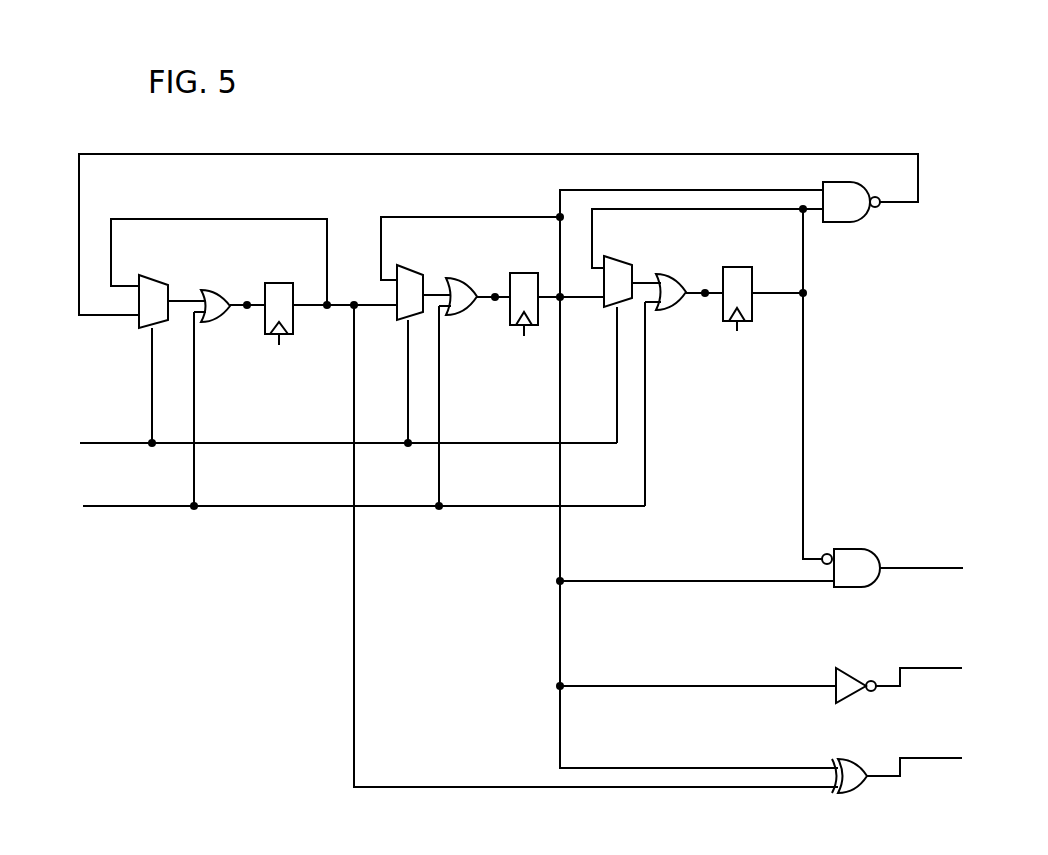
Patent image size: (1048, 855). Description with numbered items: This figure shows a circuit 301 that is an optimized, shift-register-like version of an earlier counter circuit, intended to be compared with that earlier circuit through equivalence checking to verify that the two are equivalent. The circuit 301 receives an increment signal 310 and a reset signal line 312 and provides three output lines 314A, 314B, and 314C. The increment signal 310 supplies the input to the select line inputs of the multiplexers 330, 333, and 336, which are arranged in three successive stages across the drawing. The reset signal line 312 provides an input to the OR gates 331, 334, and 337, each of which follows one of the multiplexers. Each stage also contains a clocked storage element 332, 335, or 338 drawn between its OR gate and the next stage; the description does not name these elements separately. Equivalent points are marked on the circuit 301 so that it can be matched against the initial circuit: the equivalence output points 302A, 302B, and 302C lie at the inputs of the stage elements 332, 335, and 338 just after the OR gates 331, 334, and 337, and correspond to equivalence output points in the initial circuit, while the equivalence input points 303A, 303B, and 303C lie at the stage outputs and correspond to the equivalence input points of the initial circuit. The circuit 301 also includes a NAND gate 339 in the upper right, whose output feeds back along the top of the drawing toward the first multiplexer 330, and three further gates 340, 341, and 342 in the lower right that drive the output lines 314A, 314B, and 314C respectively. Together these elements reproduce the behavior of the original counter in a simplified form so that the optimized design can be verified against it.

The circuit 301 is at (805, 92).
The increment signal 310 is at (90, 446).
The reset signal line 312 is at (92, 509).
The multiplexer 330 is at (152, 275).
The OR gate 331 is at (213, 290).
The first flip-flop 332 is at (279, 283).
The multiplexer 333 is at (410, 265).
The OR gate 334 is at (459, 278).
The second flip-flop 335 is at (524, 273).
The multiplexer 336 is at (620, 256).
The OR gate 337 is at (672, 274).
The third flip-flop 338 is at (737, 267).
The NAND gate 339 is at (845, 222).
The gate 340 is at (855, 587).
The gate 341 is at (837, 668).
The gate 342 is at (838, 759).
The equivalence output point 302A is at (247, 308).
The equivalence output point 302B is at (495, 300).
The equivalence output point 302C is at (705, 296).
The equivalence input point 303A is at (327, 308).
The equivalence input point 303B is at (562, 300).
The equivalence input point 303C is at (806, 294).
The output line 314A is at (963, 569).
The output line 314B is at (962, 668).
The output line 314C is at (962, 757).